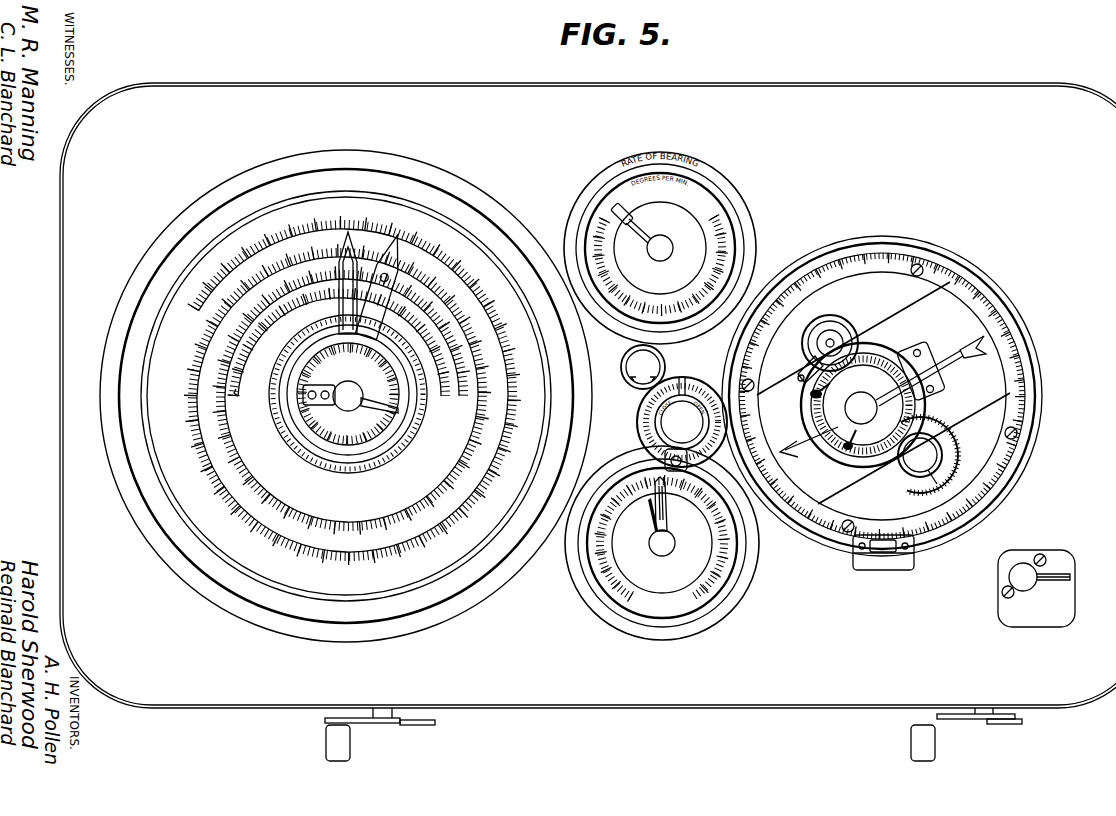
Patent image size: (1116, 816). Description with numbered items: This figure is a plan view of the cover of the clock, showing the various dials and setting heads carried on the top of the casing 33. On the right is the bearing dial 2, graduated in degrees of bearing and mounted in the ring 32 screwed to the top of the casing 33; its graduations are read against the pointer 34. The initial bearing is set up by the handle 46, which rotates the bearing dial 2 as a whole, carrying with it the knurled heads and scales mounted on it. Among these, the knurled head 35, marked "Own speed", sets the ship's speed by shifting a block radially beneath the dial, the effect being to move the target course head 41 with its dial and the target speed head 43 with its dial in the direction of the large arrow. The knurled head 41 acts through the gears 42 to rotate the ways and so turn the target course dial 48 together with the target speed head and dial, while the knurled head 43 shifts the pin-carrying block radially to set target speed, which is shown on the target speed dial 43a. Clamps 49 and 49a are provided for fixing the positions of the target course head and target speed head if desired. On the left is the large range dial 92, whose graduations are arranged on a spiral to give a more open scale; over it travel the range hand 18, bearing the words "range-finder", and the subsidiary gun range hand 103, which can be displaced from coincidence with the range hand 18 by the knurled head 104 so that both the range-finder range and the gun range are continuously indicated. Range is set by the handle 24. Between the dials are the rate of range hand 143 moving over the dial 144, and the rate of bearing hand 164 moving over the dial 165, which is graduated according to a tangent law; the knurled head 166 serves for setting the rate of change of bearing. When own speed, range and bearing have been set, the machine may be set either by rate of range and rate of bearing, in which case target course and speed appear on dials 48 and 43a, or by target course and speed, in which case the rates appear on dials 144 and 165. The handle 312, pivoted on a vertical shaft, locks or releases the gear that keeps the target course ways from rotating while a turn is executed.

The bearing dial 2 is at (1020, 440).
The range hand 18 is at (340, 307).
The handle 24 is at (340, 742).
The ring 32 is at (1000, 505).
The casing 33 is at (588, 395).
The pointer 34 is at (910, 543).
The knurled head 35 is at (927, 443).
The knurled head 41 is at (812, 343).
The gears 42 is at (867, 343).
The knurled head 43 is at (883, 393).
The target speed dial 43a is at (812, 395).
The handle 46 is at (908, 742).
The target course dial 48 is at (828, 318).
The clamp 49 is at (807, 387).
The clamp 49a is at (840, 458).
The range dial 92 is at (530, 447).
The gun range hand 103 is at (381, 317).
The knurled head 104 is at (348, 394).
The rate of range hand 143 is at (661, 505).
The rate of range dial 144 is at (649, 603).
The rate of bearing hand 164 is at (647, 250).
The rate of bearing dial 165 is at (694, 297).
The knurled head 166 is at (660, 366).
The handle 312 is at (1055, 582).